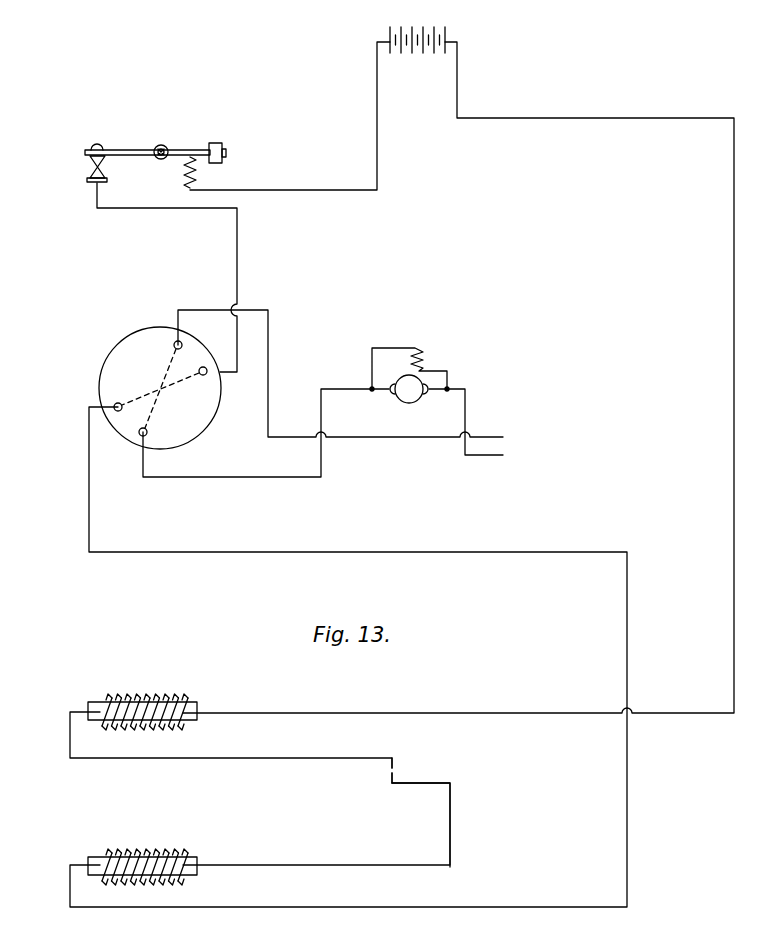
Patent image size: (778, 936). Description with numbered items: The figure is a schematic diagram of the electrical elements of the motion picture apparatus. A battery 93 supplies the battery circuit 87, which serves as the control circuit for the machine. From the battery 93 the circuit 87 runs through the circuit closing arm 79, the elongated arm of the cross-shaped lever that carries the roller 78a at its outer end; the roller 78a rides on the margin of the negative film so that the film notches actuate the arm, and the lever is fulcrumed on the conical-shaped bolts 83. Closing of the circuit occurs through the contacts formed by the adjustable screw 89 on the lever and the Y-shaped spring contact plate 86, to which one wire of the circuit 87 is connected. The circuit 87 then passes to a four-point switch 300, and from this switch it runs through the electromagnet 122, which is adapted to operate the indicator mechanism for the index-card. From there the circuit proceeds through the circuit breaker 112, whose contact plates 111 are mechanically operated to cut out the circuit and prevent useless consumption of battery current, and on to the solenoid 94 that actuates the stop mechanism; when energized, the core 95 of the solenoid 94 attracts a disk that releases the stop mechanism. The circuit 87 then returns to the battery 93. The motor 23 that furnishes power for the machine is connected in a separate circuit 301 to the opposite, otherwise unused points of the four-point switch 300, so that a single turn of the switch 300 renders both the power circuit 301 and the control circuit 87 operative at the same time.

The battery circuit 87 is at (120, 150).
The adjustable screw 89 is at (85, 152).
The conical-shaped bolts 83 is at (161, 145).
The elongated arm 79 is at (183, 150).
The roller 78a is at (218, 143).
The Y-shaped spring contact plate 86 is at (90, 180).
The battery 93 is at (427, 55).
The four-point switch 300 is at (130, 352).
The motor circuit 301 is at (268, 358).
The motor 23 is at (412, 386).
The solenoid 94 is at (155, 700).
The core 95 is at (88, 705).
The electromagnet 122 is at (138, 857).
The circuit breaker 112 is at (390, 762).
The contact plates 111 is at (427, 773).